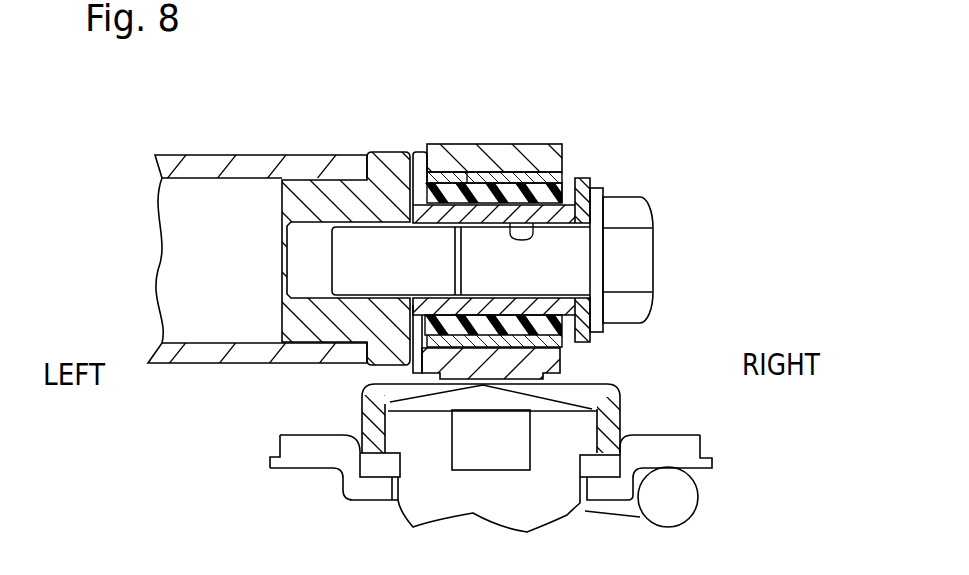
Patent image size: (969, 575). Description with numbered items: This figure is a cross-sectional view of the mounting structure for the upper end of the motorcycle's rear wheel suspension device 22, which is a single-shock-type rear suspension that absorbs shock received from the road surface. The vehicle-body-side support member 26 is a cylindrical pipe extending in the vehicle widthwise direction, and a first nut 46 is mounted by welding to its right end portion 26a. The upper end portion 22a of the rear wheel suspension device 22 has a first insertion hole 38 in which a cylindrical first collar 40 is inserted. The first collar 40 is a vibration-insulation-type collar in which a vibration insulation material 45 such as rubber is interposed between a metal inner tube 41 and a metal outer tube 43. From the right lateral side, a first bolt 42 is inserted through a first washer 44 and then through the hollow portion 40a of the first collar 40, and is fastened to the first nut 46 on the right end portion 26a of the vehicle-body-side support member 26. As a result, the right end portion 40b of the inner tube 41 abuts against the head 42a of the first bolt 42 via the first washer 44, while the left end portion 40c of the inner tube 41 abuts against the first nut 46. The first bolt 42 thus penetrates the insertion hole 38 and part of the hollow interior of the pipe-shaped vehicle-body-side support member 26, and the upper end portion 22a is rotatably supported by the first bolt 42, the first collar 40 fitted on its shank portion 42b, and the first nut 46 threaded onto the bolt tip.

The rear wheel suspension device 22 is at (537, 517).
The upper end portion 22a is at (448, 152).
The vehicle-body-side support member 26 is at (190, 372).
The right end portion 26a is at (343, 155).
The first insertion hole 38 is at (414, 158).
The first collar 40 is at (563, 330).
The hollow portion 40a is at (533, 225).
The right end portion 40b is at (568, 208).
The left end portion 40c is at (372, 378).
The inner tube 41 is at (540, 303).
The first bolt 42 is at (658, 195).
The head 42a is at (632, 284).
The shank portion 42b is at (562, 241).
The outer tube 43 is at (516, 186).
The first washer 44 is at (580, 180).
The vibration insulation material 45 is at (478, 183).
The first nut 46 is at (367, 327).